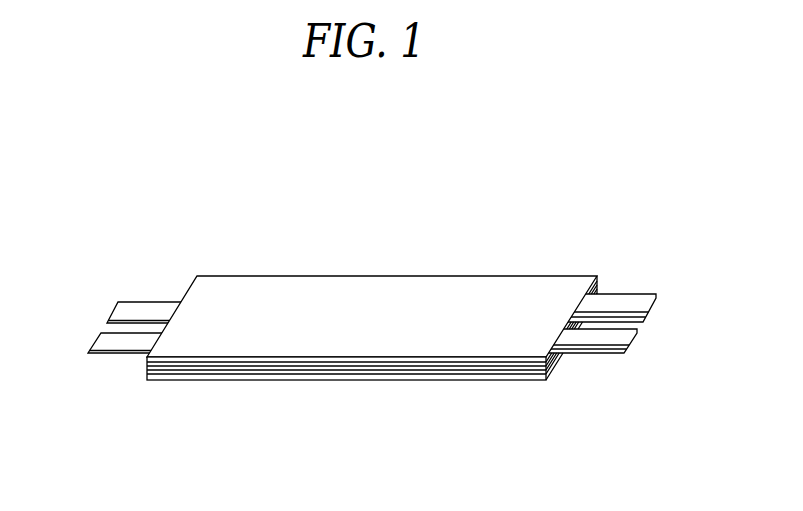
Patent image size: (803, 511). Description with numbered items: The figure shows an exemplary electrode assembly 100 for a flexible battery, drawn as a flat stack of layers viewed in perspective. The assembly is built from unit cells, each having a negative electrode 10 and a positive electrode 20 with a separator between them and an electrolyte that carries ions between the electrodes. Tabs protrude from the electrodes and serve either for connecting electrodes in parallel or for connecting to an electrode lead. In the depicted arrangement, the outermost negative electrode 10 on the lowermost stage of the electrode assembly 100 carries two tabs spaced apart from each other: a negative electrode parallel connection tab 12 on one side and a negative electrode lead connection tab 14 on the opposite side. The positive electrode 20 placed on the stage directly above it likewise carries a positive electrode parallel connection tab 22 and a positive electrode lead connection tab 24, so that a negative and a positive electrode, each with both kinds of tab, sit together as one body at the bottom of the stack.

The electrode assembly 100 is at (190, 157).
The negative electrode 10 is at (417, 293).
The positive electrode 20 is at (342, 366).
The negative electrode parallel connection tab 12 is at (650, 317).
The negative electrode lead connection tab 14 is at (116, 307).
The positive electrode parallel connection tab 22 is at (633, 348).
The positive electrode lead connection tab 24 is at (100, 339).